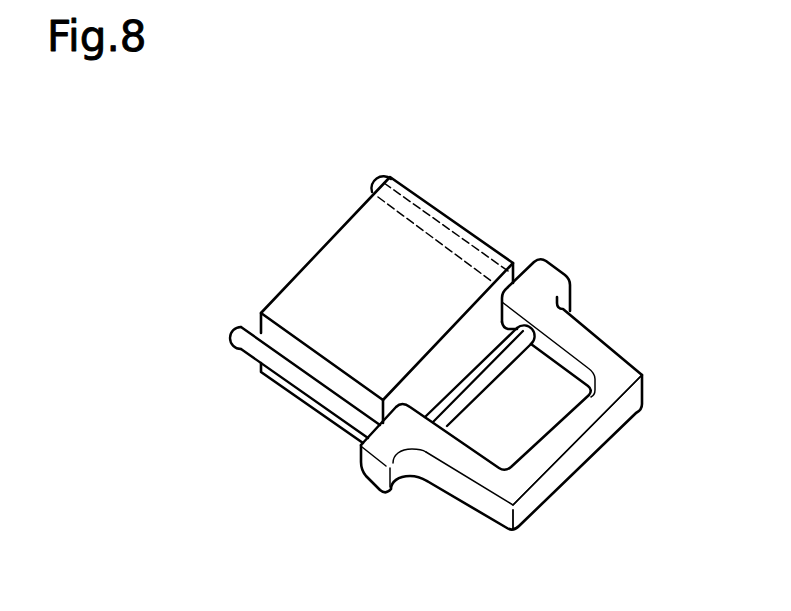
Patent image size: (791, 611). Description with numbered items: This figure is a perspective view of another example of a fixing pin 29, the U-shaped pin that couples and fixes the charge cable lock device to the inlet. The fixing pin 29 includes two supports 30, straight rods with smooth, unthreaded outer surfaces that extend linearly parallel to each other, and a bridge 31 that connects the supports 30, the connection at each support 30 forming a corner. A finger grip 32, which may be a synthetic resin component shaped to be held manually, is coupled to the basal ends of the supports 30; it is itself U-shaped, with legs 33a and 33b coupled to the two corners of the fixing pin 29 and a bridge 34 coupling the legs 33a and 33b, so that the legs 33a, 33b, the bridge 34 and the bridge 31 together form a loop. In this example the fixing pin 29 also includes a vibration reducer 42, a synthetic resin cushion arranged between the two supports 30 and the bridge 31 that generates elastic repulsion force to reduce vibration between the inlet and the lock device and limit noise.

The fixing pin 29 is at (188, 212).
The support 30 is at (380, 178).
The bridge 31 is at (492, 387).
The finger grip 32 is at (611, 440).
The leg 33a is at (457, 497).
The leg 33b is at (590, 335).
The bridge 34 is at (571, 471).
The vibration reducer 42 is at (329, 240).